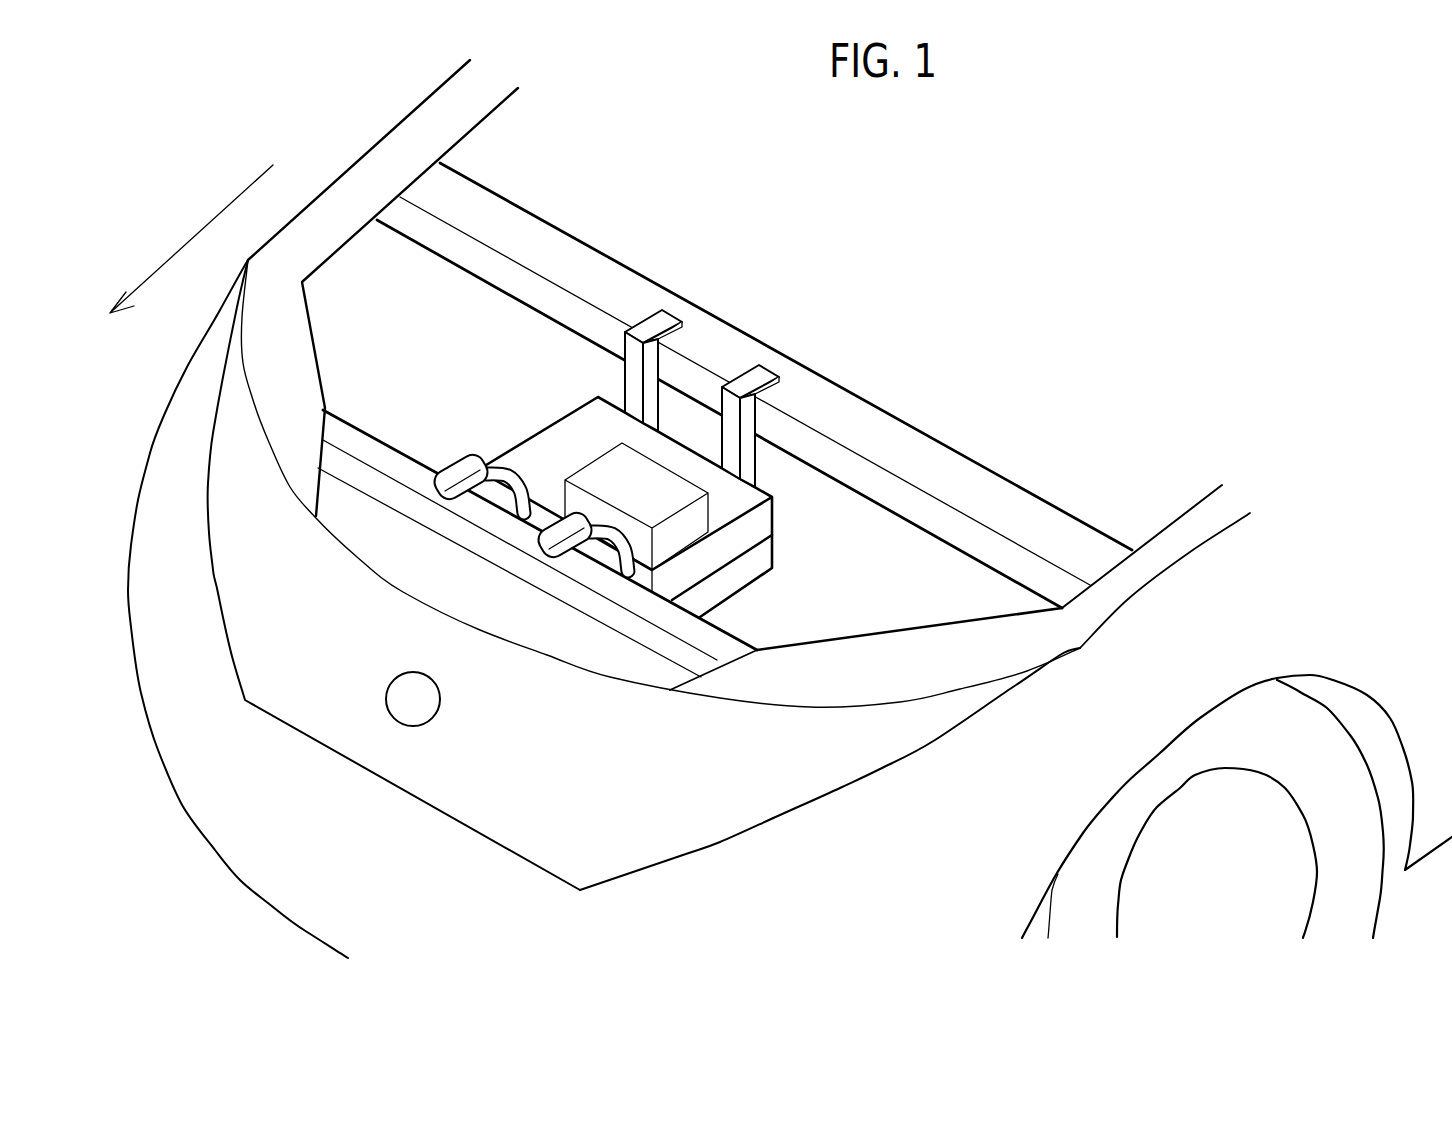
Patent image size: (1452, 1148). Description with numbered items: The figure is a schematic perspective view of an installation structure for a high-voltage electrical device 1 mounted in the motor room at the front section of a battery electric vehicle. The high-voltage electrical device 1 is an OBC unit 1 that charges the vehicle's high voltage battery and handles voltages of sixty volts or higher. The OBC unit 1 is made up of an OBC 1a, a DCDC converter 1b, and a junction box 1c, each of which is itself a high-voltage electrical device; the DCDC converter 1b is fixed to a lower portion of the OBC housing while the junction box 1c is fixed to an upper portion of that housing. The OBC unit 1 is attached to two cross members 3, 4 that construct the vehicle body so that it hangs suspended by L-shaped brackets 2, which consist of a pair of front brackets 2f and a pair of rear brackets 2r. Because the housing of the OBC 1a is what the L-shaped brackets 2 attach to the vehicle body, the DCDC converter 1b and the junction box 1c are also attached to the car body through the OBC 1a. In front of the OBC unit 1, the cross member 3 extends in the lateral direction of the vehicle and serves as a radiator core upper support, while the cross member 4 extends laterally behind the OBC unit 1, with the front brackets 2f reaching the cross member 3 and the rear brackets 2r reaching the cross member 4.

The high-voltage electrical device 1 is at (680, 507).
The OBC 1a is at (737, 537).
The DCDC converter 1b is at (750, 573).
The junction box 1c is at (673, 497).
The L-shaped brackets 2 is at (559, 447).
The rear brackets 2r is at (752, 377).
The front brackets 2f is at (560, 546).
The cross member 3 is at (358, 445).
The cross member 4 is at (877, 420).